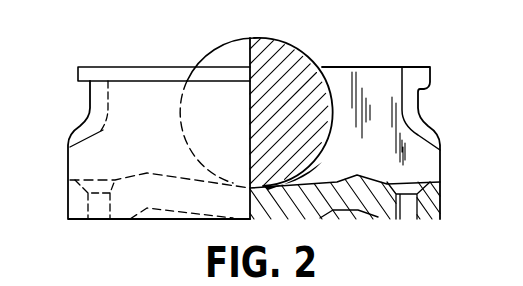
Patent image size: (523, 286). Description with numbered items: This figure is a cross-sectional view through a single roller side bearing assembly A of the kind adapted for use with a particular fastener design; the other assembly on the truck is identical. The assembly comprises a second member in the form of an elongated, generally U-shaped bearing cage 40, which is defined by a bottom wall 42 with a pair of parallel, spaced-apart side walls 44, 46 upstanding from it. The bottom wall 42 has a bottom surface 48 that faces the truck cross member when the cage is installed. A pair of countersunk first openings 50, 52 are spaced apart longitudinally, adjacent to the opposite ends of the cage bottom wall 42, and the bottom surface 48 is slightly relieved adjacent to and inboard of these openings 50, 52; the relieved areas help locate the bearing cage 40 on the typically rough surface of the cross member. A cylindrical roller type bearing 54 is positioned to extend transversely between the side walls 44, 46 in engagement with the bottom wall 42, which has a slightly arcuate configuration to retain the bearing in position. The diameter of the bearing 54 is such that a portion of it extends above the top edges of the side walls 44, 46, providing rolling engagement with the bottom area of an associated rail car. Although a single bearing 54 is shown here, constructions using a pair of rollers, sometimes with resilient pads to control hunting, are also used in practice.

The bearing cage 40 is at (200, 52).
The bottom wall 42 is at (338, 185).
The side wall 44 is at (122, 92).
The side wall 46 is at (363, 78).
The bottom surface 48 is at (150, 227).
The countersunk first opening 50 is at (407, 218).
The countersunk first opening 52 is at (112, 195).
The cylindrical roller type bearing 54 is at (240, 50).
The roller side bearing assembly A is at (311, 57).